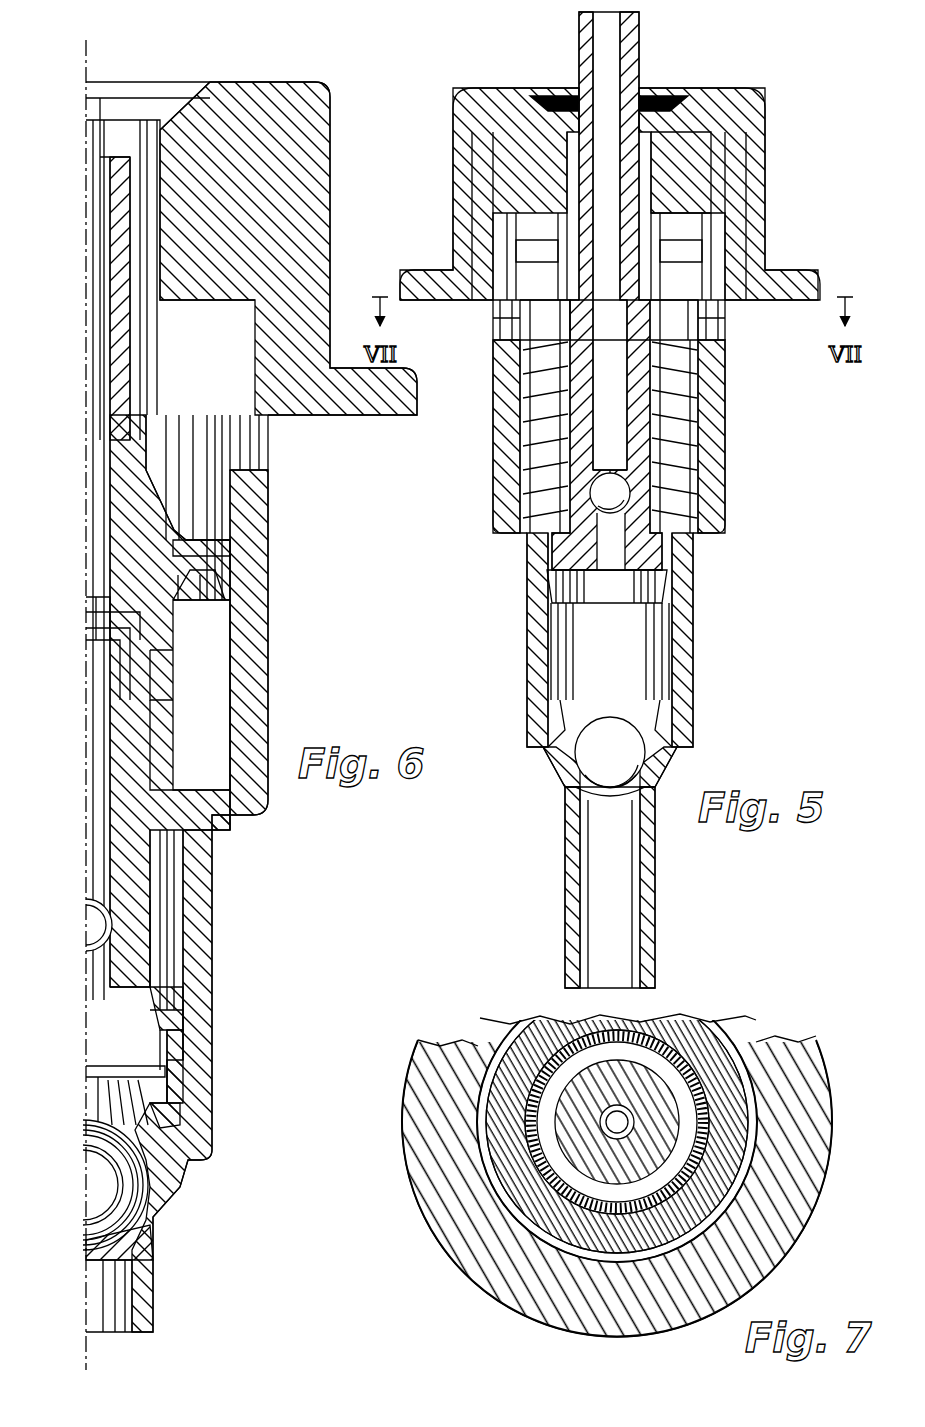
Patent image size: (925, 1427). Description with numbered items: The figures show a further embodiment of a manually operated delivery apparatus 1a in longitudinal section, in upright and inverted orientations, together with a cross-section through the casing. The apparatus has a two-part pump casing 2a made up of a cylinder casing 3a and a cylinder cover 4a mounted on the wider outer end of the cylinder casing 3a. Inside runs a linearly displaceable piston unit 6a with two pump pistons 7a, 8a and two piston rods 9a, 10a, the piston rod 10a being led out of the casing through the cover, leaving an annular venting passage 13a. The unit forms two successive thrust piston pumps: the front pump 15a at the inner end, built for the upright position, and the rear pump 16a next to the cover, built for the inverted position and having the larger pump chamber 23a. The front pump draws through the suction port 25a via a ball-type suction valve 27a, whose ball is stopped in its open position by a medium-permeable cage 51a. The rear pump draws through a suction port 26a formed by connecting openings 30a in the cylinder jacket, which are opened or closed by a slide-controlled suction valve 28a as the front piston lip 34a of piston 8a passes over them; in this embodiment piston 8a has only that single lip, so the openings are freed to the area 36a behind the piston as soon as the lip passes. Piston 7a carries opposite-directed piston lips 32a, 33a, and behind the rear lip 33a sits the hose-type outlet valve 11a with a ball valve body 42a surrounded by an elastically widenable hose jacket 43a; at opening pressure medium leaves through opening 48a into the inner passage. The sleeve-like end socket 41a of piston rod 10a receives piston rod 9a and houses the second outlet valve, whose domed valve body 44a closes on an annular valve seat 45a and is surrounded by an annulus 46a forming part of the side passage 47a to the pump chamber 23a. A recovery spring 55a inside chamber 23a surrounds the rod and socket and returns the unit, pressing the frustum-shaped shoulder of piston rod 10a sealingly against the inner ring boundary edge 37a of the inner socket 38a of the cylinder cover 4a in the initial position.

In FIG. 5, the delivery apparatus 1a is at (748, 50).
In FIG. 5, the pump casing 2a is at (495, 548).
In FIG. 7, the cylinder casing 3a is at (572, 1030).
In FIG. 6, the cylinder casing 3a is at (262, 800).
In FIG. 5, the cylinder cover 4a is at (748, 97).
In FIG. 7, the cylinder cover 4a is at (780, 1046).
In FIG. 6, the cylinder cover 4a is at (306, 97).
In FIG. 5, the piston unit 6a is at (532, 408).
In FIG. 5, the pump piston 7a is at (668, 580).
In FIG. 6, the pump piston 7a is at (170, 1045).
In FIG. 5, the pump piston 8a is at (704, 246).
In FIG. 6, the pump piston 8a is at (232, 547).
In FIG. 6, the piston rod 9a is at (150, 830).
In FIG. 5, the piston rod 10a is at (628, 68).
In FIG. 6, the piston rod 10a is at (124, 346).
In FIG. 5, the outlet valve 11a is at (675, 477).
In FIG. 6, the outlet valve 11a is at (170, 958).
In FIG. 5, the venting passage 13a is at (560, 97).
In FIG. 5, the thrust piston pump 15a is at (524, 700).
In FIG. 5, the thrust piston pump 16a is at (478, 482).
In FIG. 5, the pump chamber 23a is at (692, 358).
In FIG. 5, the suction port 25a is at (560, 922).
In FIG. 5, the suction port 26a is at (493, 330).
In FIG. 6, the suction port 26a is at (270, 460).
In FIG. 5, the suction valve 27a is at (612, 700).
In FIG. 6, the suction valve 27a is at (172, 1190).
In FIG. 5, the suction valve 28a is at (690, 298).
In FIG. 5, the connecting openings 30a is at (522, 344).
In FIG. 6, the connecting openings 30a is at (222, 446).
In FIG. 6, the piston lip 32a is at (182, 1106).
In FIG. 6, the piston lip 33a is at (184, 990).
In FIG. 5, the piston lip 34a is at (725, 305).
In FIG. 7, the piston lip 34a is at (500, 1075).
In FIG. 6, the piston lip 34a is at (232, 620).
In FIG. 6, the area 36a is at (224, 505).
In FIG. 5, the inner ring boundary edge 37a is at (696, 207).
In FIG. 5, the inner socket 38a is at (694, 178).
In FIG. 6, the end socket 41a is at (150, 730).
In FIG. 6, the valve body 42a is at (94, 877).
In FIG. 6, the hose jacket 43a is at (152, 925).
In FIG. 7, the valve body 44a is at (622, 1118).
In FIG. 6, the valve body 44a is at (106, 630).
In FIG. 7, the valve seat 45a is at (545, 1060).
In FIG. 6, the valve seat 45a is at (104, 598).
In FIG. 6, the annulus 46a is at (150, 643).
In FIG. 6, the side passage 47a is at (150, 676).
In FIG. 7, the opening 48a is at (617, 1115).
In FIG. 6, the opening 48a is at (92, 616).
In FIG. 6, the cage 51a is at (100, 1076).
In FIG. 5, the recovery spring 55a is at (682, 408).